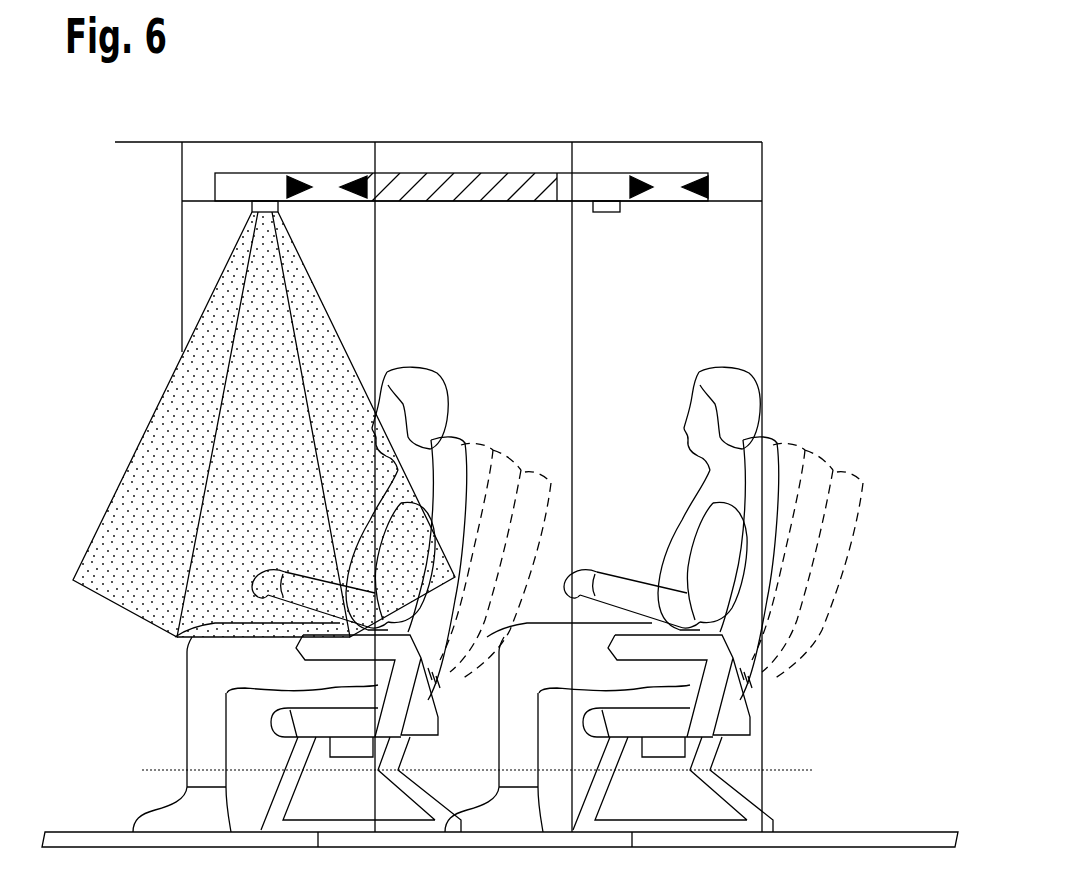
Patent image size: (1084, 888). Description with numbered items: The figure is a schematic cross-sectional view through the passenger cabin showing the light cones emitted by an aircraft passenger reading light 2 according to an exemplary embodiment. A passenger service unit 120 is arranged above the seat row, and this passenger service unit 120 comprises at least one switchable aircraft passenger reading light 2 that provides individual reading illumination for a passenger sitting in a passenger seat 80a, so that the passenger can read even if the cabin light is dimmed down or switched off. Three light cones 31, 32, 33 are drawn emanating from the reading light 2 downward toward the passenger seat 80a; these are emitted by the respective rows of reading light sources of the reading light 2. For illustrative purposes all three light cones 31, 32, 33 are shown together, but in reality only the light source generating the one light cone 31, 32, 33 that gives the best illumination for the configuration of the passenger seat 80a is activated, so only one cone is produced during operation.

The aircraft passenger reading light 2 is at (264, 200).
The passenger service unit 120 is at (235, 209).
The light cone 31 is at (186, 382).
The light cone 32 is at (210, 625).
The light cone 33 is at (311, 313).
The passenger seat 80a is at (488, 432).